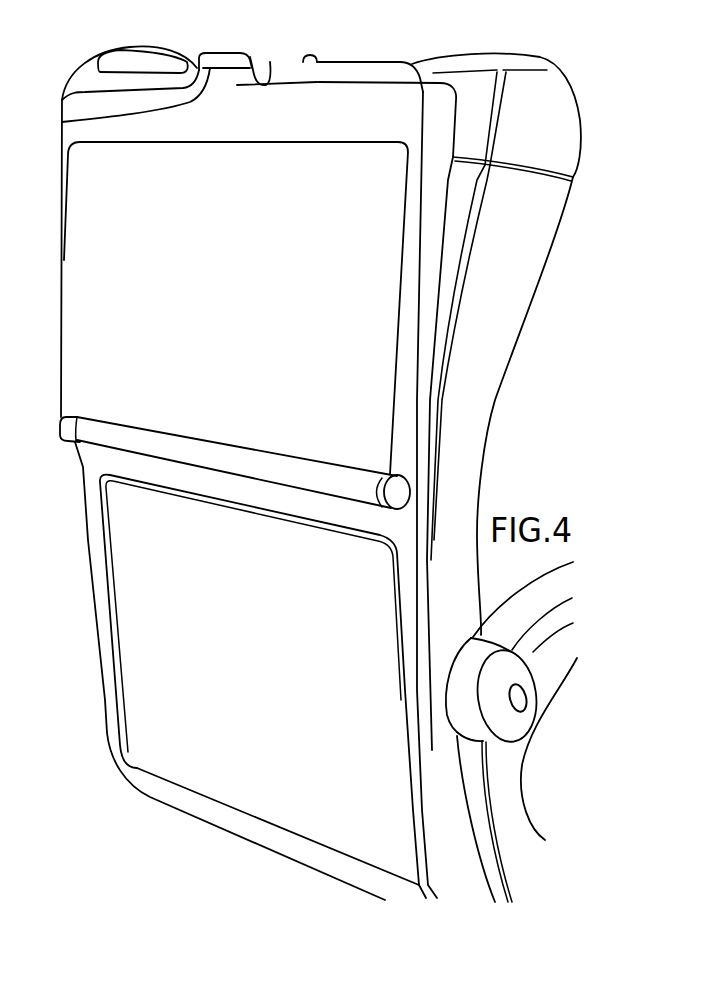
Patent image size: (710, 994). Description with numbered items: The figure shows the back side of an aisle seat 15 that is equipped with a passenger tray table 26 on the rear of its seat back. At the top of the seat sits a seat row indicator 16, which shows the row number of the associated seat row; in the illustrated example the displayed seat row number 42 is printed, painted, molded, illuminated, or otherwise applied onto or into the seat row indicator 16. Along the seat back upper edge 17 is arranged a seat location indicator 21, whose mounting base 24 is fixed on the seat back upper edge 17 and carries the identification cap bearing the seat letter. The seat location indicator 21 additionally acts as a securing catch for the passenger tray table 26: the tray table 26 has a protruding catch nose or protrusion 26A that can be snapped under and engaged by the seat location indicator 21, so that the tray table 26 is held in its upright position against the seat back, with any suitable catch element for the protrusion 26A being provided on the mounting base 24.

The aisle seat 15 is at (614, 146).
The seat row indicator 16 is at (572, 97).
The seat back upper edge 17 is at (310, 87).
The seat location indicator 21 is at (220, 57).
The mounting base 24 is at (63, 127).
The passenger tray table 26 is at (373, 432).
The catch nose or protrusion 26A is at (276, 63).
The seat row number 42 is at (490, 106).